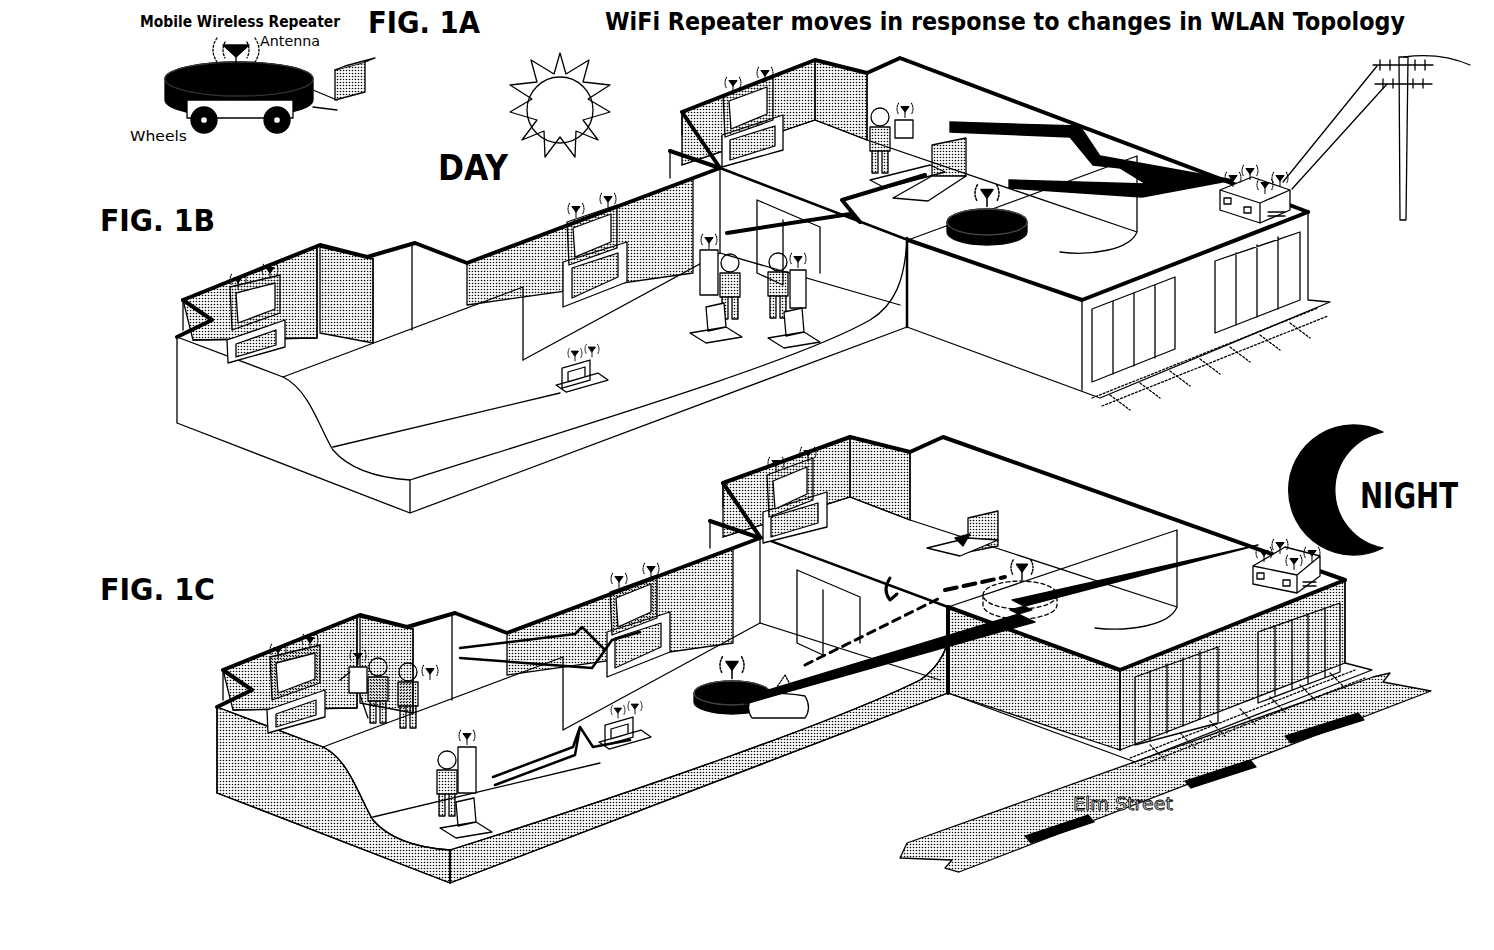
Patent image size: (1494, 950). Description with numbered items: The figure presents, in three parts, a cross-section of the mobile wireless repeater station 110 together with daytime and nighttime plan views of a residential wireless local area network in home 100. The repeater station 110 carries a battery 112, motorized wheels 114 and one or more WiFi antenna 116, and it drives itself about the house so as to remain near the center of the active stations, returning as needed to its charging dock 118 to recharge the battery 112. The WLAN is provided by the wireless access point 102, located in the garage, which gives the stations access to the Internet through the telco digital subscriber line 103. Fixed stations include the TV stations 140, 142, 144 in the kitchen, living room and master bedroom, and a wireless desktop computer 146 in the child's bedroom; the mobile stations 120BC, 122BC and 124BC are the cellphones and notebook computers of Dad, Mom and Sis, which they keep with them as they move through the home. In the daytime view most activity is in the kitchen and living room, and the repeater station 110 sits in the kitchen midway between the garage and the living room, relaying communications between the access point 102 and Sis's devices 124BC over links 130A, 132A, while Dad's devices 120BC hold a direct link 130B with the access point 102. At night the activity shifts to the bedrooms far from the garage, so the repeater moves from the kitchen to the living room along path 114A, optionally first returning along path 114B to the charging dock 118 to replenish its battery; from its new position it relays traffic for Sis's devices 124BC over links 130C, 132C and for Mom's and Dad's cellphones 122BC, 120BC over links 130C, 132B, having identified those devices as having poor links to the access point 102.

In FIG. 1B, the home 100 is at (252, 440).
In FIG. 1C, the home 100 is at (290, 806).
In FIG. 1B, the wireless access point (WAP) 102 is at (1240, 178).
In FIG. 1C, the wireless access point (WAP) 102 is at (1262, 552).
In FIG. 1B, the Telco digital subscriber line (DSL) 103 is at (1348, 72).
In FIG. 1A, the mobile wireless repeater station (MWRS) 110 is at (164, 96).
In FIG. 1B, the mobile wireless repeater station (MWRS) 110 is at (1027, 224).
In FIG. 1C, the mobile wireless repeater station (MWRS) 110 is at (738, 670).
In FIG. 1A, the battery 112 is at (232, 118).
In FIG. 1A, the motorized wheels 114 is at (266, 155).
In FIG. 1C, the path 114A is at (915, 592).
In FIG. 1C, the path 114B is at (1020, 572).
In FIG. 1A, the WiFi antenna 116 is at (221, 44).
In FIG. 1A, the charging dock 118 is at (366, 92).
In FIG. 1B, the charging dock 118 is at (968, 162).
In FIG. 1C, the charging dock 118 is at (980, 512).
In FIG. 1B, the Dad's mobile stations (cellphone and notebook computer) 120BC is at (915, 128).
In FIG. 1C, the Dad's mobile stations (cellphone and notebook computer) 120BC is at (366, 668).
In FIG. 1B, the Mom's mobile stations (cellphone and notebook computer) 122BC is at (806, 270).
In FIG. 1C, the Mom's mobile stations (cellphone and notebook computer) 122BC is at (436, 680).
In FIG. 1B, the Sis's mobile stations (cellphone and notebook computer) 124BC is at (698, 250).
In FIG. 1C, the Sis's mobile stations (cellphone and notebook computer) 124BC is at (476, 746).
In FIG. 1B, the communication link 130A is at (1170, 190).
In FIG. 1B, the communication link 130B is at (1092, 128).
In FIG. 1C, the communication link 130C is at (1133, 578).
In FIG. 1B, the communication link 132A is at (836, 202).
In FIG. 1C, the communication link 132B is at (572, 632).
In FIG. 1C, the communication link 132C is at (580, 755).
In FIG. 1B, the TV station 140 is at (748, 95).
In FIG. 1C, the TV station 140 is at (780, 475).
In FIG. 1B, the TV station 142 is at (592, 215).
In FIG. 1C, the TV station 142 is at (632, 590).
In FIG. 1B, the TV station 144 is at (254, 282).
In FIG. 1C, the TV station 144 is at (296, 650).
In FIG. 1B, the wireless desktop computer 146 is at (556, 395).
In FIG. 1C, the wireless desktop computer 146 is at (636, 735).